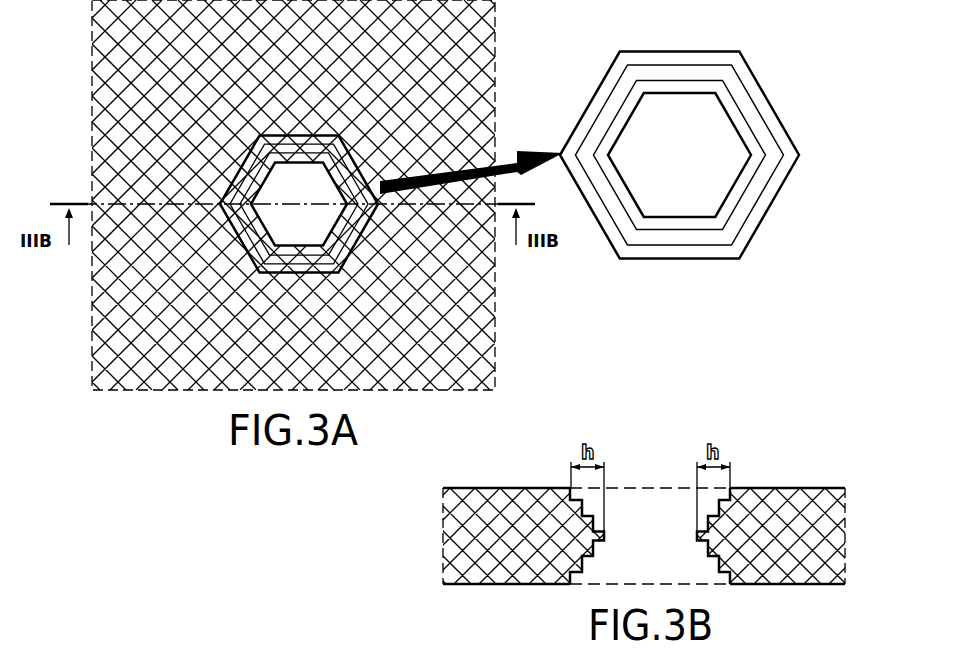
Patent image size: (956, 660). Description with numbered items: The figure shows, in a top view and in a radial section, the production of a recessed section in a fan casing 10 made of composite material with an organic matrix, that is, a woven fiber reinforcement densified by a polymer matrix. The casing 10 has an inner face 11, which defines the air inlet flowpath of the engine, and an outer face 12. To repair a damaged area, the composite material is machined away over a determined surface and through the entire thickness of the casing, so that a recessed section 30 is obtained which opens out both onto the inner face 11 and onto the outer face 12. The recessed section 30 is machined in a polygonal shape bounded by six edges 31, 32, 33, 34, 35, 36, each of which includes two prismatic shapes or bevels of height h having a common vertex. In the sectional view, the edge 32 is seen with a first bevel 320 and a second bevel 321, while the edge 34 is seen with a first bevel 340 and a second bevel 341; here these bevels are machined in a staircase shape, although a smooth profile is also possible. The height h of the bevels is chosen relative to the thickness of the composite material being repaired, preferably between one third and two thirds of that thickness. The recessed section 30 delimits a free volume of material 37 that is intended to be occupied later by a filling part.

In FIG. 3A, the fan casing 10 is at (495, 62).
In FIG. 3B, the fan casing 10 is at (443, 535).
In FIG. 3B, the inner face 11 is at (808, 584).
In FIG. 3A, the outer face 12 is at (135, 83).
In FIG. 3B, the outer face 12 is at (807, 488).
In FIG. 3A, the recessed section 30 is at (257, 265).
In FIG. 3B, the recessed section 30 is at (647, 478).
In FIG. 3A, the edge 31 is at (625, 193).
In FIG. 3A, the edge 32 is at (618, 125).
In FIG. 3B, the edge 32 is at (580, 538).
In FIG. 3A, the edge 33 is at (675, 88).
In FIG. 3A, the edge 34 is at (735, 115).
In FIG. 3B, the edge 34 is at (718, 538).
In FIG. 3A, the edge 35 is at (742, 183).
In FIG. 3A, the edge 36 is at (685, 222).
In FIG. 3B, the free volume of material 37 is at (663, 544).
In FIG. 3B, the first bevel 320 is at (582, 510).
In FIG. 3B, the second bevel 321 is at (582, 562).
In FIG. 3B, the first bevel 340 is at (720, 510).
In FIG. 3B, the second bevel 341 is at (720, 562).